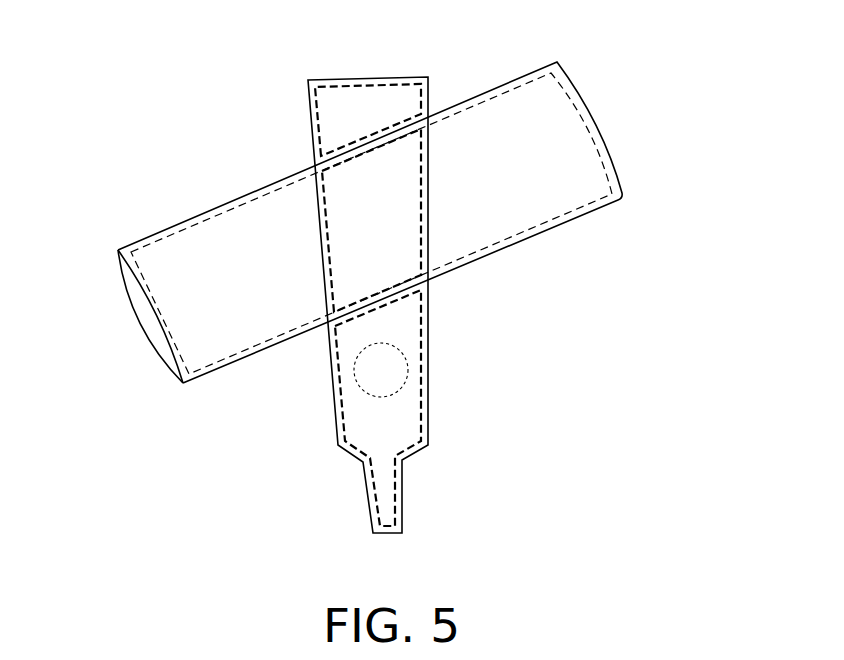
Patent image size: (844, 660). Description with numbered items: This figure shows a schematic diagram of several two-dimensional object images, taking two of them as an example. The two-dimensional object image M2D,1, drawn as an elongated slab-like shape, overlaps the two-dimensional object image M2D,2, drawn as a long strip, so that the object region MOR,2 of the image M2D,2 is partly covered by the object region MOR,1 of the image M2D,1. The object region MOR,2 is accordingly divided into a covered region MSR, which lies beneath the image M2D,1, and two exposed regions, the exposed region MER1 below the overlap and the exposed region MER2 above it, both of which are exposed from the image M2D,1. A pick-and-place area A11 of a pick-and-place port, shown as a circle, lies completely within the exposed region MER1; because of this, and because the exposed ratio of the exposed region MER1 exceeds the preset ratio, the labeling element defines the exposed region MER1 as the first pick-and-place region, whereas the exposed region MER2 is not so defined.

The two-dimensional object image M2D,1 is at (160, 228).
The object region MOR,1 is at (236, 360).
The two-dimensional object image M2D,2 is at (402, 495).
The object region MOR,2 is at (566, 277).
The exposed region MER2 is at (428, 97).
The covered region MSR is at (427, 203).
The exposed region MER1 is at (425, 370).
The pick-and-place area A11 is at (381, 397).